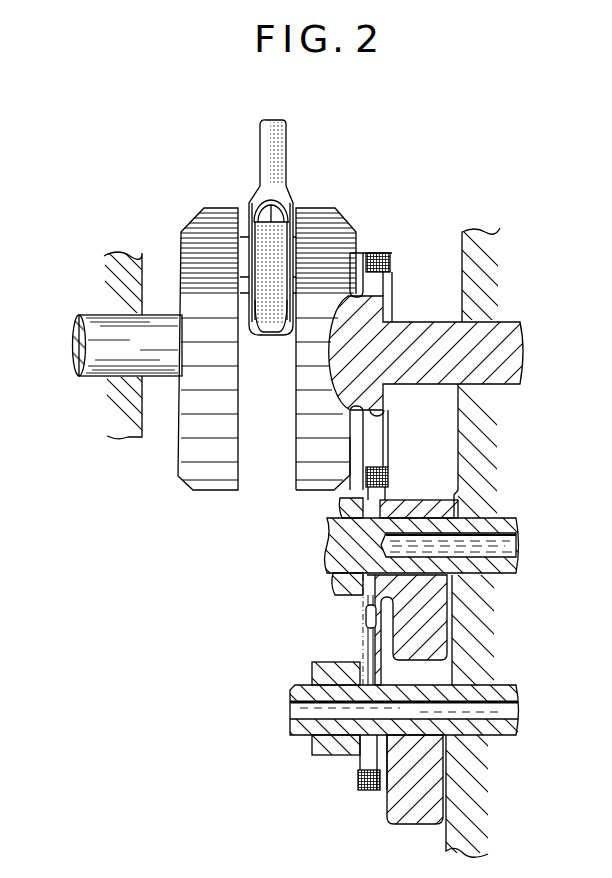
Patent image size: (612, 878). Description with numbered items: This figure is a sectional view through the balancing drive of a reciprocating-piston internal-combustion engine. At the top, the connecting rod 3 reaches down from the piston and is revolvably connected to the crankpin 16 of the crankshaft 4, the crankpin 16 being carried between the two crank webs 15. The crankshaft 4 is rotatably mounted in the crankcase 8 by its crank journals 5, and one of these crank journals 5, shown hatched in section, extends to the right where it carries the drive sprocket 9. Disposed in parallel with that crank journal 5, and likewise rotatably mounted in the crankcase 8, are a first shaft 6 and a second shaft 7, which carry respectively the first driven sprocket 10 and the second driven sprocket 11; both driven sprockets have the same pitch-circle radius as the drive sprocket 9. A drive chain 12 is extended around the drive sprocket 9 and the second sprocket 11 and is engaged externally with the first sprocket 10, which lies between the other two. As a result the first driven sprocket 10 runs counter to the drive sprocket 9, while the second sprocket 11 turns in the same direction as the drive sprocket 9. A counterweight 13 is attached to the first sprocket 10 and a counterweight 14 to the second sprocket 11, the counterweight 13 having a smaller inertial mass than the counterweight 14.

The connecting rod 3 is at (284, 147).
The crankshaft 4 is at (323, 200).
The crank journals 5 is at (519, 323).
The first shaft 6 is at (332, 550).
The second shaft 7 is at (297, 727).
The crankcase 8 is at (462, 250).
The drive sprocket 9 is at (385, 406).
The first driven sprocket 10 is at (368, 606).
The second driven sprocket 11 is at (368, 658).
The drive chain 12 is at (392, 260).
The counterweight 13 is at (447, 620).
The counterweight 14 is at (395, 804).
The crank webs 15 is at (182, 243).
The crankpin 16 is at (265, 335).